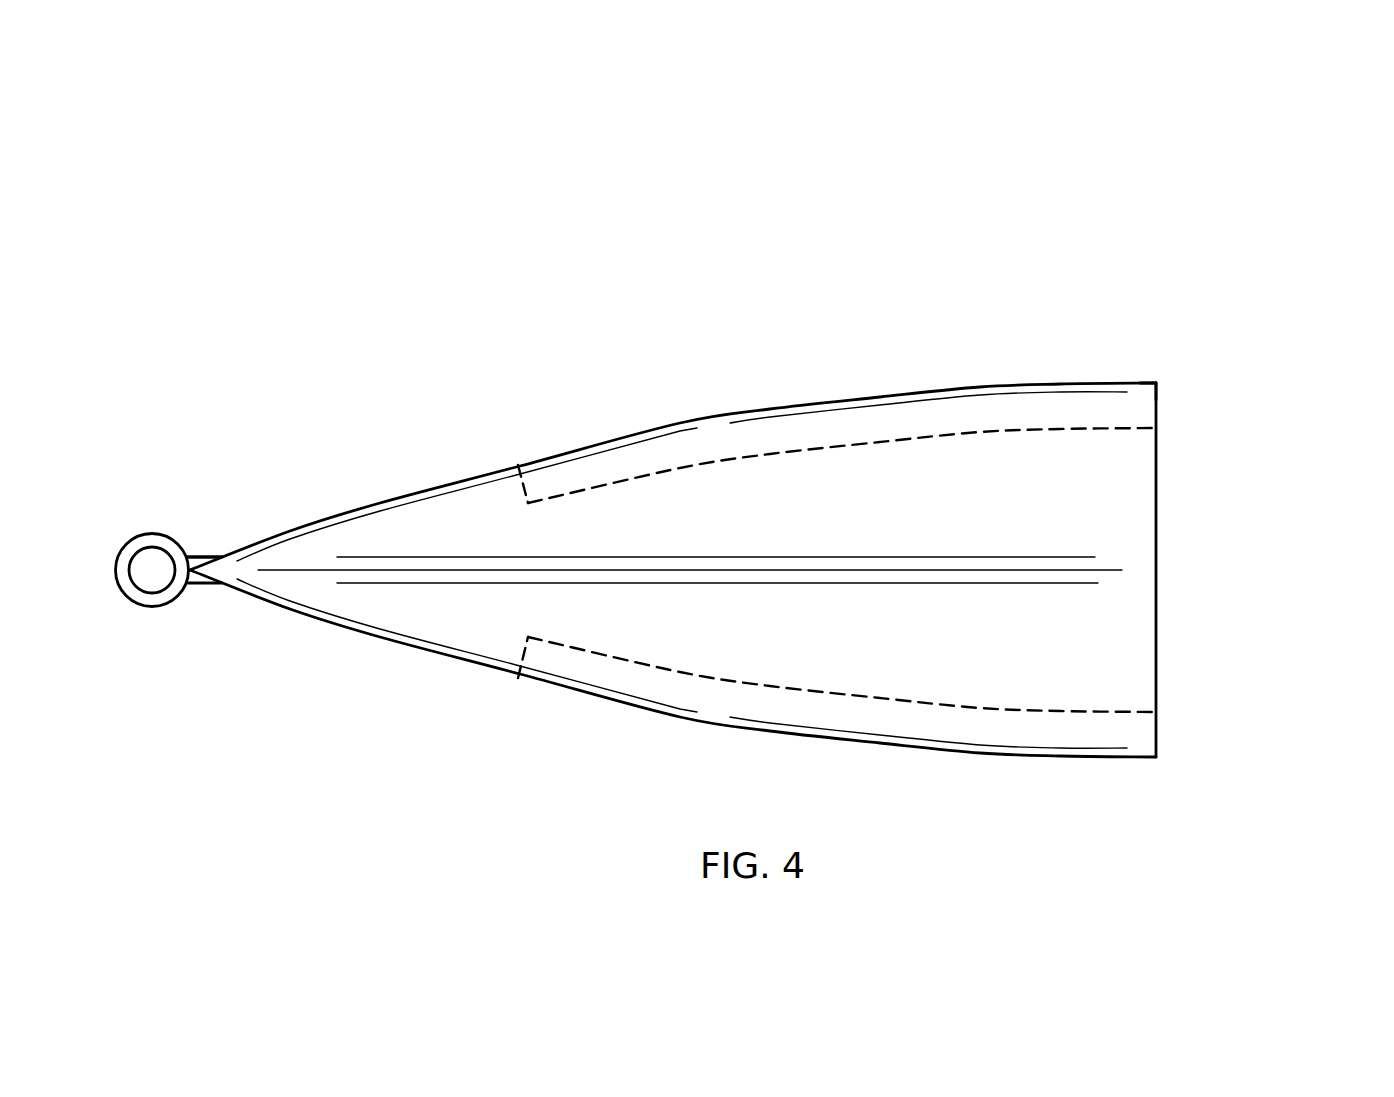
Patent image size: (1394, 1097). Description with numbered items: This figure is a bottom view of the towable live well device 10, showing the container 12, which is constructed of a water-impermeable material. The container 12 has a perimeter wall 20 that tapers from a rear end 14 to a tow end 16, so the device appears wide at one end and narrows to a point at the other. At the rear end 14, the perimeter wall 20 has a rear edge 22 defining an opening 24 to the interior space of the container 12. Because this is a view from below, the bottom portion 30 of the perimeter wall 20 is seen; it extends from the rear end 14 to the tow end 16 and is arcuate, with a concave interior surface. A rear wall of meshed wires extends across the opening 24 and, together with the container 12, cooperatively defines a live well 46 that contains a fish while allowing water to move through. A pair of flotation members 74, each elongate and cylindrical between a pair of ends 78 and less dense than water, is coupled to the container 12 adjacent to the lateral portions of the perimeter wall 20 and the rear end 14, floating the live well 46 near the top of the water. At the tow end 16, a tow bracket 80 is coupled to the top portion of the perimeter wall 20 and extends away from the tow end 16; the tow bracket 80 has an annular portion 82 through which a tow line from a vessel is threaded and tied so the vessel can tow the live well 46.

The towable live well device 10 is at (1065, 203).
The container 12 is at (387, 527).
The rear end 14 is at (1156, 502).
The tow end 16 is at (188, 583).
The perimeter wall 20 is at (380, 598).
The rear edge 22 is at (1156, 602).
The opening 24 is at (1173, 653).
The bottom portion 30 is at (463, 622).
The live well 46 is at (1175, 380).
The flotation member 74 is at (770, 433).
The end 78 is at (520, 490).
The tow bracket 80 is at (189, 556).
The annular portion 82 is at (146, 606).